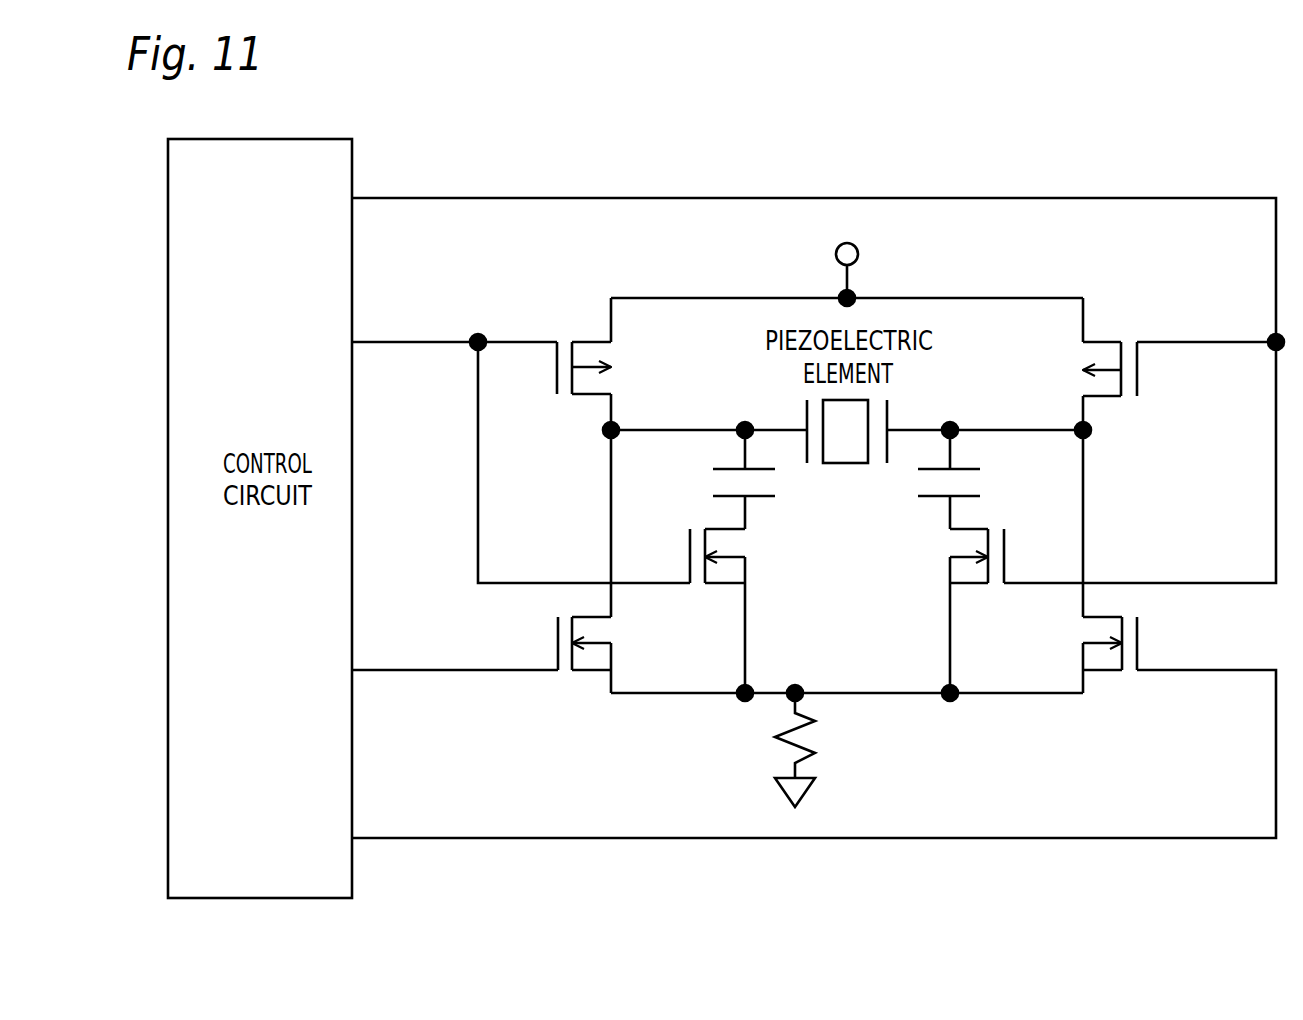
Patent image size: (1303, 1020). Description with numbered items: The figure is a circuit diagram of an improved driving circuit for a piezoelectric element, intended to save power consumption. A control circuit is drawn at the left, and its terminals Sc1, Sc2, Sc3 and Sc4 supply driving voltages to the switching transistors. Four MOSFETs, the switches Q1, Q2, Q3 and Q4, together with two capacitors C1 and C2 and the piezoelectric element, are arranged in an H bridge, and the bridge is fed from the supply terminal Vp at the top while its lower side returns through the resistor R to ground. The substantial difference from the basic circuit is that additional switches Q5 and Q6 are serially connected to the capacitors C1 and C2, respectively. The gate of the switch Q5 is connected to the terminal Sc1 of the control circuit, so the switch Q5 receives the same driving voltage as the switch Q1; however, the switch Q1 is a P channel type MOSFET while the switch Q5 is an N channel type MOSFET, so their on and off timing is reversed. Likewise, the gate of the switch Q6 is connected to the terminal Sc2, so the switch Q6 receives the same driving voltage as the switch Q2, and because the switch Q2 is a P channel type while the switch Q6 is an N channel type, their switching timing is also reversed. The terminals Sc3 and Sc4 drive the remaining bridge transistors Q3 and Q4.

The switch Q1 is at (581, 350).
The switch Q2 is at (1100, 351).
The MOSFET Q3 is at (554, 662).
The MOSFET Q4 is at (1137, 662).
The switch Q5 is at (722, 594).
The switch Q6 is at (974, 594).
The capacitor C1 is at (765, 470).
The capacitor C2 is at (924, 470).
The terminal of the control circuit Sc1 is at (521, 443).
The terminal of the control circuit Sc2 is at (814, 371).
The control signal Sc3 is at (455, 651).
The control signal Sc4 is at (814, 754).
The power supply voltage Vp is at (872, 273).
The resistor R is at (718, 749).